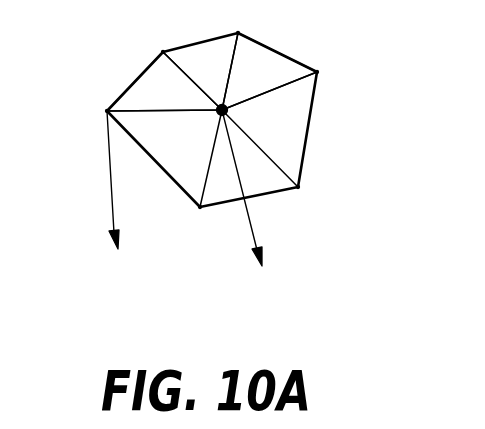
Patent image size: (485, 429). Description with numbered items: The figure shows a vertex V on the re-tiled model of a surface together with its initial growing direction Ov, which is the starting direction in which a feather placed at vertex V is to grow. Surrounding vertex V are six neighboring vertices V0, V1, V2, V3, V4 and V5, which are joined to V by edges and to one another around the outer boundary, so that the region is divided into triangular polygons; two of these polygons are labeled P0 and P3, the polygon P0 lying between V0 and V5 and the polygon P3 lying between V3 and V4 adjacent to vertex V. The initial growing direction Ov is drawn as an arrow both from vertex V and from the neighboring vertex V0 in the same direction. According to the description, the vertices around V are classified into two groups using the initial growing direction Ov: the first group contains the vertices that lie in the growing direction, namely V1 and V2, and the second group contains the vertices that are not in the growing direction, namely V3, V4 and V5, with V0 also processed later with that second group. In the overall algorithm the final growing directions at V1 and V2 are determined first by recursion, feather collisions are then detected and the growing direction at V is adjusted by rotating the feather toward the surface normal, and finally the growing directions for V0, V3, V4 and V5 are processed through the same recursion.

The vertex V is at (242, 114).
The neighboring vertex V0 is at (92, 114).
The neighboring vertex V1 is at (196, 227).
The neighboring vertex V2 is at (313, 204).
The neighboring vertex V3 is at (332, 78).
The neighboring vertex V4 is at (252, 24).
The neighboring vertex V5 is at (144, 51).
The polygon (face) P0 is at (164, 81).
The polygon (face) P3 is at (269, 71).
The initial growing direction Ov is at (200, 199).